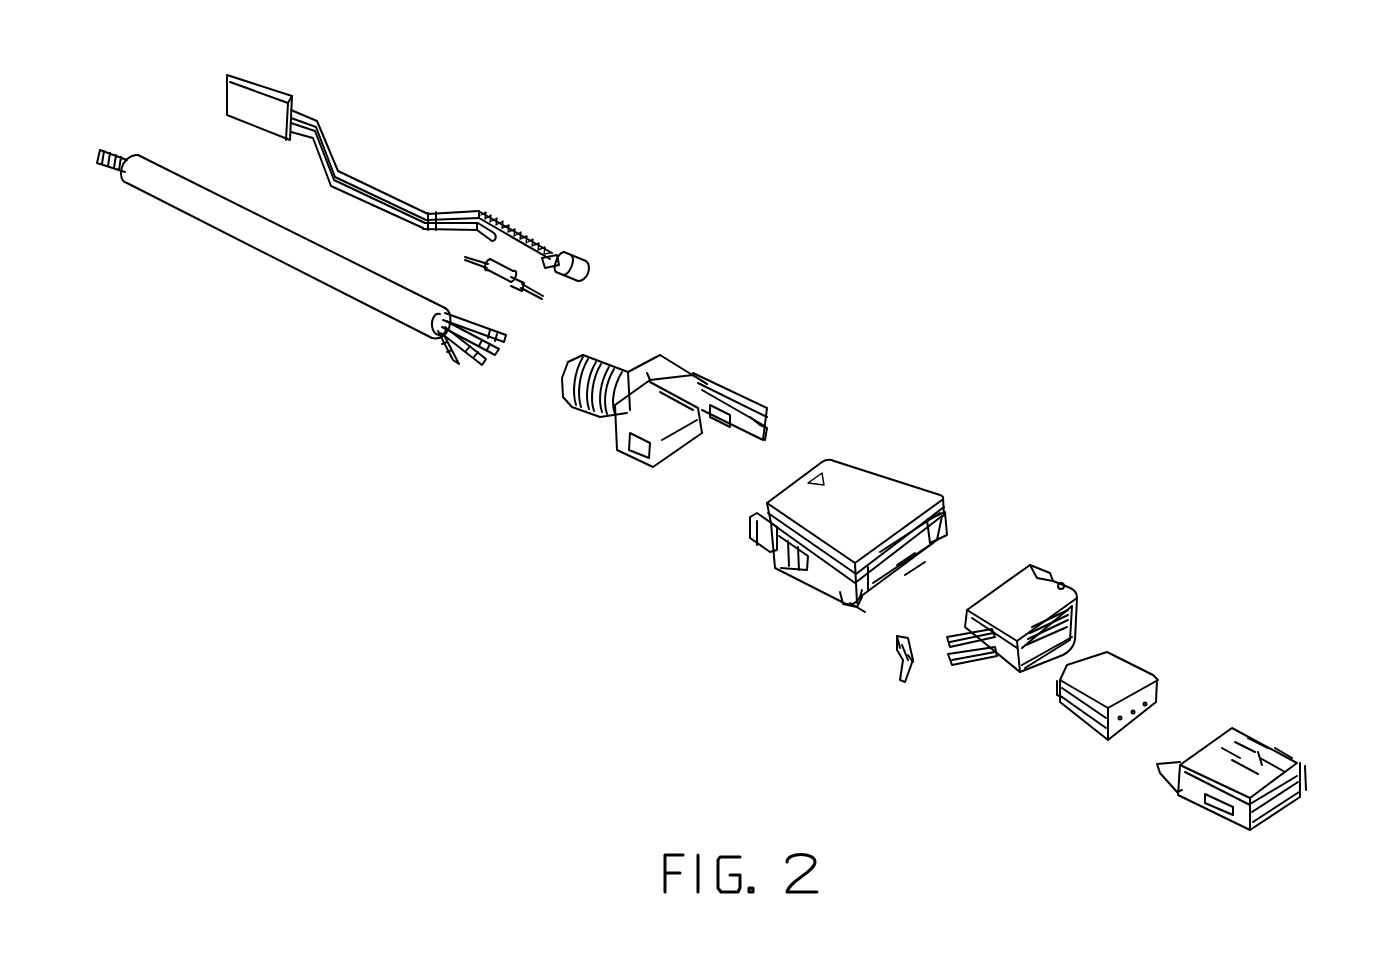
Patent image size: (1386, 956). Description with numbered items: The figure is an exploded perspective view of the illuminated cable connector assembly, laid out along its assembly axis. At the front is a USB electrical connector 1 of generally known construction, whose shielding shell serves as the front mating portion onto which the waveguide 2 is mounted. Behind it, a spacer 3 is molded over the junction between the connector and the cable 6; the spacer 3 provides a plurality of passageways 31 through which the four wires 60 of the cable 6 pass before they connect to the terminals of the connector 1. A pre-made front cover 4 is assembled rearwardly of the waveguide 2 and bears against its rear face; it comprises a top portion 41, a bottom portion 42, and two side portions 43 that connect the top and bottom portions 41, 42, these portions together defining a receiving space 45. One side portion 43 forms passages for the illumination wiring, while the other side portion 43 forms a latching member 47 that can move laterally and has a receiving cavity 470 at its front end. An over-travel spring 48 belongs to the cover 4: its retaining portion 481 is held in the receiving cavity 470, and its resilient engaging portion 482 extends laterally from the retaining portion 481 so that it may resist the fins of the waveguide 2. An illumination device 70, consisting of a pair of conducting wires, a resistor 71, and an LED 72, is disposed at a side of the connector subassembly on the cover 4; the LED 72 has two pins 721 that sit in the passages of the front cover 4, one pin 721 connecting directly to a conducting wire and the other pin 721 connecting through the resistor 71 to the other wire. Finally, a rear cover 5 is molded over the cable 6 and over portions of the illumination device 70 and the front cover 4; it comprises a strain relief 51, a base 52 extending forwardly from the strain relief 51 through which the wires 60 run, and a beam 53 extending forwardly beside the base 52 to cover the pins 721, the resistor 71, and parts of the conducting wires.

The USB electrical connector 1 is at (1273, 732).
The waveguide 2 is at (1062, 562).
The spacer 3 is at (1148, 697).
The passageways 31 is at (1120, 720).
The front cover 4 is at (846, 572).
The top portion 41 is at (860, 503).
The bottom portion 42 is at (897, 565).
The side portions 43 is at (842, 597).
The receiving space 45 is at (908, 547).
The latching member 47 is at (770, 540).
The receiving cavity 470 is at (863, 610).
The over-travel spring 48 is at (903, 685).
The retaining portion 481 is at (893, 643).
The resilient engaging portion 482 is at (917, 663).
The rear cover 5 is at (672, 417).
The strain relief 51 is at (597, 403).
The base 52 is at (650, 408).
The beam 53 is at (743, 397).
The cable 6 is at (238, 268).
The wires 60 is at (487, 372).
The illumination device 70 is at (458, 202).
The resistor 71 is at (518, 287).
The LED 72 is at (590, 270).
The pins 721 is at (523, 228).